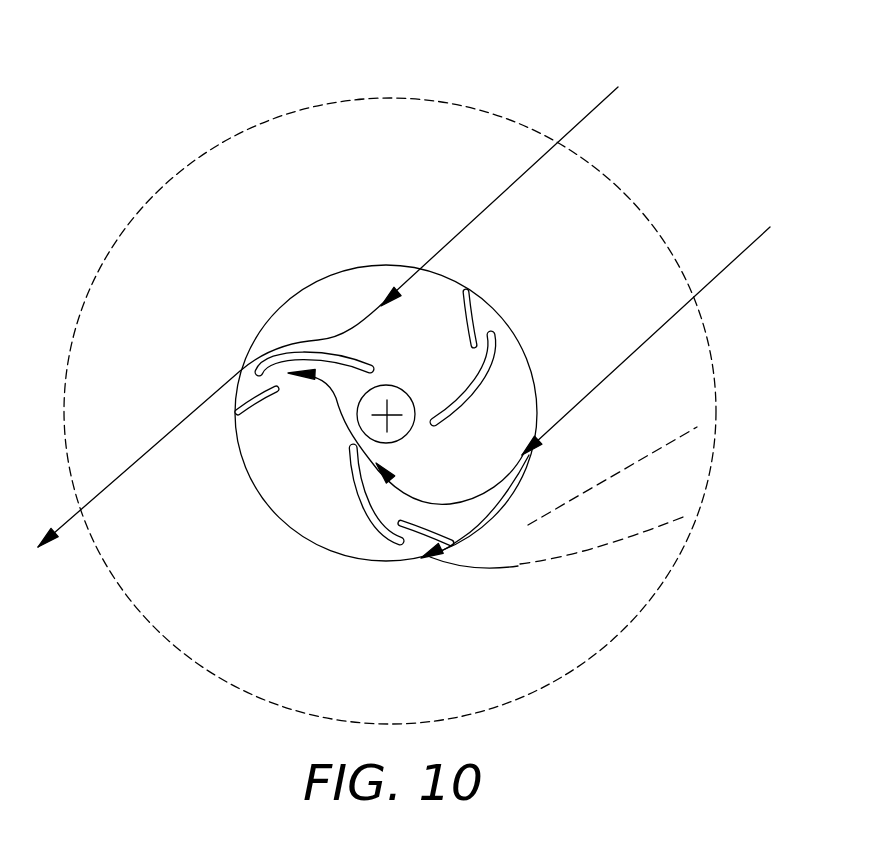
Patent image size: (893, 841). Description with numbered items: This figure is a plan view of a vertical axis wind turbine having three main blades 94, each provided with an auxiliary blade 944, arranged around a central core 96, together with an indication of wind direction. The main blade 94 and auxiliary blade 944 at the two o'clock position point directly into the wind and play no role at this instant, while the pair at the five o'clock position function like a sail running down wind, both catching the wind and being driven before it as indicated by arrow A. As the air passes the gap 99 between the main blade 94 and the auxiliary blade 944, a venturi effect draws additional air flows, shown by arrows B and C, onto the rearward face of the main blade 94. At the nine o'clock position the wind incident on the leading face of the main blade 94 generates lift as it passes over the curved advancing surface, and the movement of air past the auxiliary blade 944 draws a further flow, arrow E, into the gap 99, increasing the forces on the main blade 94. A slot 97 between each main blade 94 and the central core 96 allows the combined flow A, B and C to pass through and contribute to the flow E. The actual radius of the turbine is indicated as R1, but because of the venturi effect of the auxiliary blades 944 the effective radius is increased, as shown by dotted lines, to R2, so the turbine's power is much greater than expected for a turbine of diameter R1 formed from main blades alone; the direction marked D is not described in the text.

The main blade 94 is at (364, 500).
The auxiliary blade 944 is at (491, 305).
The central core 96 is at (402, 431).
The slot 97 is at (430, 392).
The gap 99 is at (487, 324).
The actual radius R1 is at (311, 540).
The effective radius R2 is at (634, 612).
The arrow A is at (617, 366).
The arrow B is at (532, 526).
The arrow C is at (512, 567).
The direction D is at (463, 228).
The arrow E is at (335, 401).